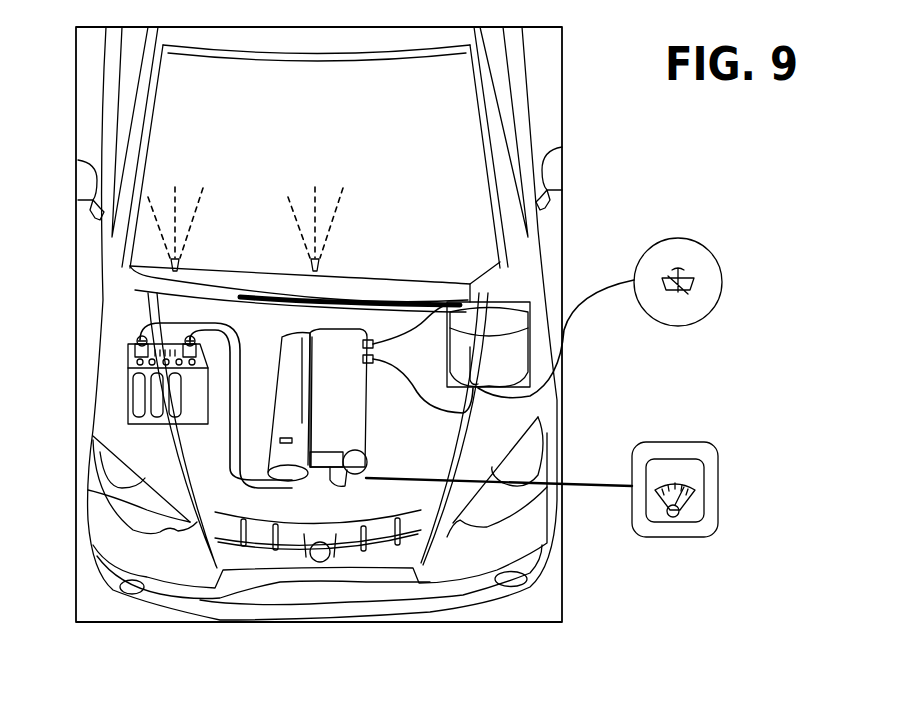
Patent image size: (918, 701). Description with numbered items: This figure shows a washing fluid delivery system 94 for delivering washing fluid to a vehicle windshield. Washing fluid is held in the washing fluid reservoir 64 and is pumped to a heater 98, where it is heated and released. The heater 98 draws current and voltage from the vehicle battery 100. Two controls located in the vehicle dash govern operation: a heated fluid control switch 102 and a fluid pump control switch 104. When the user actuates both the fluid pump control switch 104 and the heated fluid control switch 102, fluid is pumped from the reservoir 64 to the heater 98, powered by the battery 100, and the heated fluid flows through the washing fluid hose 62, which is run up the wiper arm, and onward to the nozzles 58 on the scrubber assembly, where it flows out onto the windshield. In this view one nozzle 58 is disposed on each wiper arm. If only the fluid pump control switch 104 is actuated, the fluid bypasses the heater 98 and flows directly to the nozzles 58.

The nozzle 58 is at (170, 264).
The washing fluid hose 62 is at (455, 310).
The washing fluid reservoir 64 is at (513, 330).
The washing fluid delivery system 94 is at (782, 280).
The heater 98 is at (297, 452).
The vehicle battery 100 is at (139, 393).
The heated fluid control switch 102 is at (718, 486).
The fluid pump control switch 104 is at (711, 313).